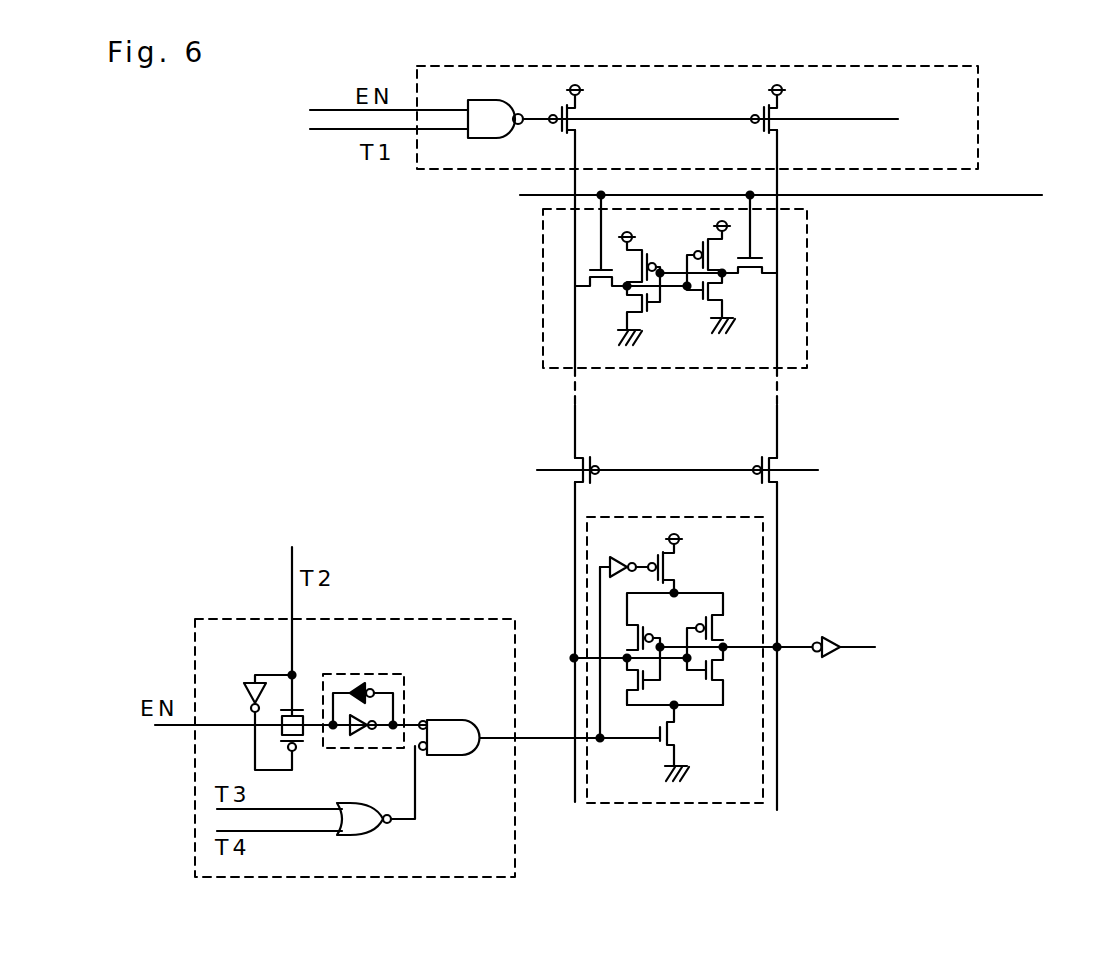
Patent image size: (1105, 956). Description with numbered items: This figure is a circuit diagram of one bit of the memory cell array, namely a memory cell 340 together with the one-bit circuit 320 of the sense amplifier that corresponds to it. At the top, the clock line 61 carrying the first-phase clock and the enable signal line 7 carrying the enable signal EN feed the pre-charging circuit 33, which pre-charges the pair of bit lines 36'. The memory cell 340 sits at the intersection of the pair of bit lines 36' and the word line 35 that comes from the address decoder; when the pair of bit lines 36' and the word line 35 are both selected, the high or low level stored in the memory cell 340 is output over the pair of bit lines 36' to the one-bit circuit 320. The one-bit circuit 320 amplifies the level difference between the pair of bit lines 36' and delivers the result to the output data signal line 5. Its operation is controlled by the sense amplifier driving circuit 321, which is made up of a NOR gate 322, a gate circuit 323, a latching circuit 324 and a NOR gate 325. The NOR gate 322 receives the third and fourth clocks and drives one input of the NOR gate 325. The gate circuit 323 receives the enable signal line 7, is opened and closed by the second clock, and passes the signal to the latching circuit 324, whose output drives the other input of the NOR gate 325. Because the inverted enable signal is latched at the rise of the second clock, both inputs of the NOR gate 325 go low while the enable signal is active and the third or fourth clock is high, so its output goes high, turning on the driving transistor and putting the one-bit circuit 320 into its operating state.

The clock line 61 is at (334, 110).
The enable signal line 7 is at (334, 130).
The pre-charging circuit 33 is at (978, 102).
The word line 35 is at (960, 195).
The memory cell 340 is at (807, 275).
The pair of bit lines 36' is at (677, 436).
The one-bit circuit of the sense amplifier 320 is at (635, 803).
The output data signal line 5 is at (860, 647).
The sense amplifier driving circuit 321 is at (385, 619).
The gate circuit 323 is at (303, 730).
The latching circuit 324 is at (374, 666).
The NOR gate 325 is at (477, 702).
The NOR gate 322 is at (352, 836).